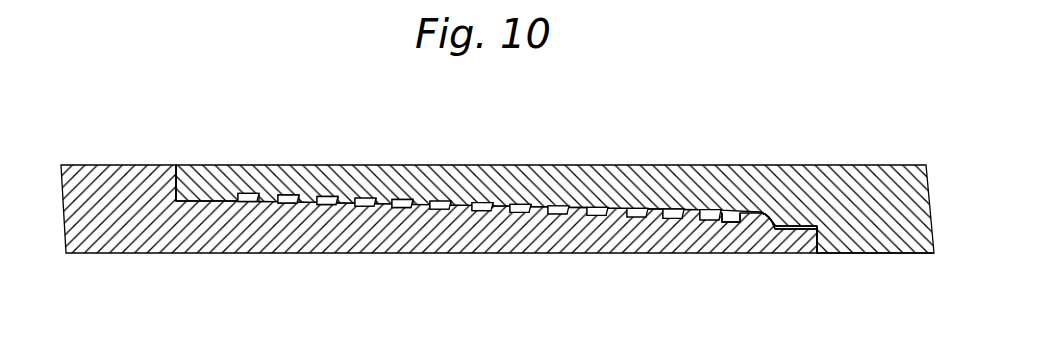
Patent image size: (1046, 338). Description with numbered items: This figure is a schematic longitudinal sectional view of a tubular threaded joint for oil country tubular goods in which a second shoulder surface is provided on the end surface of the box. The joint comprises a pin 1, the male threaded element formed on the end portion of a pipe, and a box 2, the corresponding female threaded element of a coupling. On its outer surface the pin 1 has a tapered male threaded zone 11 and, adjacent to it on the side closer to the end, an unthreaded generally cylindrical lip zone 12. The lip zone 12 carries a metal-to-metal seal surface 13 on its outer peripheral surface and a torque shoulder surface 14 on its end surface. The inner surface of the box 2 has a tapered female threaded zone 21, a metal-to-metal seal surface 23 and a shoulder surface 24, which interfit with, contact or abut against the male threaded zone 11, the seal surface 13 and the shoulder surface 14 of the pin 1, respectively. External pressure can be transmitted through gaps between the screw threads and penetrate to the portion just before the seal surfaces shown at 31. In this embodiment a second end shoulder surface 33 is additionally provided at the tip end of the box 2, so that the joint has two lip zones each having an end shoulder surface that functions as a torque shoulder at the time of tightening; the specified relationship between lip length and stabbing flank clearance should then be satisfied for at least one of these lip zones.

The pin 1 is at (297, 225).
The box 2 is at (592, 172).
The tapered male threaded zone 11 is at (476, 211).
The lip zone 12 is at (790, 232).
The metal-to-metal seal surface 13 is at (773, 222).
The torque shoulder surface 14 is at (806, 253).
The tapered female threaded zone 21 is at (467, 205).
The metal-to-metal seal surface 23 is at (768, 226).
The shoulder surface 24 is at (818, 252).
The portion just before the seal surfaces 31 is at (732, 213).
The second end shoulder surface 33 is at (200, 166).